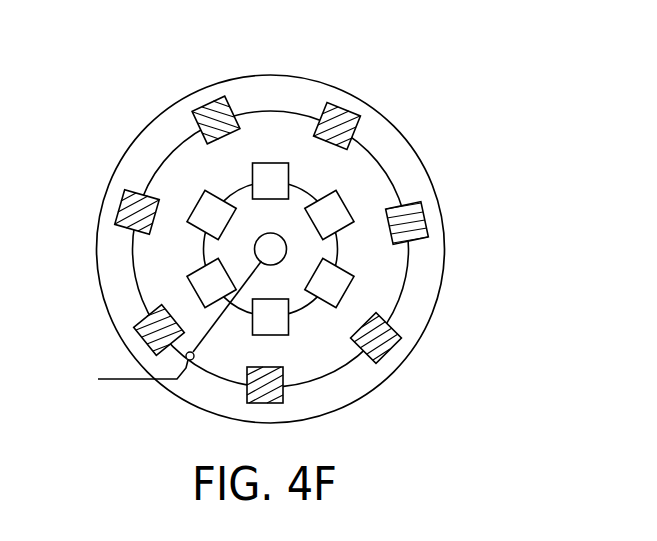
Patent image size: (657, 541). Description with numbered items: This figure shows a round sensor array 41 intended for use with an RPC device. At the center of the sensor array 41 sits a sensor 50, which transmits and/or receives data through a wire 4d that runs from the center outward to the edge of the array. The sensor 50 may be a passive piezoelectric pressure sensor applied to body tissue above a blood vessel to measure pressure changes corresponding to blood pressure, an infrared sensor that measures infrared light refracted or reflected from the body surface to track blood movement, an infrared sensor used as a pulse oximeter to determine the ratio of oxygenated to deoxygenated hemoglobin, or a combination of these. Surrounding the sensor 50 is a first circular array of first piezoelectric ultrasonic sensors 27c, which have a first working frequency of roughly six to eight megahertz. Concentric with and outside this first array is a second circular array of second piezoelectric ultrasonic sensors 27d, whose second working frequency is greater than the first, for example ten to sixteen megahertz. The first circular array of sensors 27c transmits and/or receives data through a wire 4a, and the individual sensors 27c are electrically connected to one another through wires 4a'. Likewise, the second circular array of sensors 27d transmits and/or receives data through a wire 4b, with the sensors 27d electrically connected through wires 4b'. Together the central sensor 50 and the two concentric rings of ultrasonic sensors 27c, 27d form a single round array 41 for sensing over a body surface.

The sensor array 41 is at (232, 77).
The wires 4b' is at (257, 225).
The second piezoelectric ultrasonic sensors 27d is at (347, 110).
The first piezoelectric ultrasonic sensors 27c is at (395, 205).
The sensor 50 is at (287, 249).
The wire 4b is at (104, 189).
The wire 4a is at (128, 272).
The wire 4d is at (117, 380).
The wires 4a' is at (361, 354).